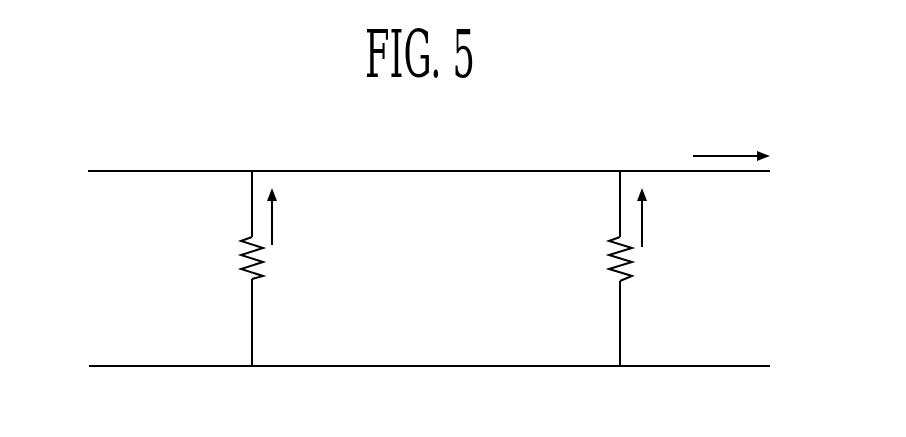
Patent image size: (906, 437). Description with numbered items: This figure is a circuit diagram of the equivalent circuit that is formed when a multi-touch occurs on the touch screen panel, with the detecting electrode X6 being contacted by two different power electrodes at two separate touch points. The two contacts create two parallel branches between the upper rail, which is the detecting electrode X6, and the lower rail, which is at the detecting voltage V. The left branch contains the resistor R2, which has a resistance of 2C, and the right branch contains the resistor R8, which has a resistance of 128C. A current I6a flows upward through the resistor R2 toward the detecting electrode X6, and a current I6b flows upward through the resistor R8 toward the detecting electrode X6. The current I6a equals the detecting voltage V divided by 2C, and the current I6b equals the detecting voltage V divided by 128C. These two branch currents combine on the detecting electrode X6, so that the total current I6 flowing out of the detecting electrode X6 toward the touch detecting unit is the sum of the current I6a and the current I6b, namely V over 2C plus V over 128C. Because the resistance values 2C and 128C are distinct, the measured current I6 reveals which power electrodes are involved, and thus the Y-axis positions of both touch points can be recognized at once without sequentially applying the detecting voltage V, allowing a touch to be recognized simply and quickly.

The detecting electrode X6 is at (414, 169).
The detecting voltage V is at (419, 365).
The current I6 is at (731, 138).
The current I6a is at (288, 222).
The current I6b is at (660, 223).
The resistor R2 is at (262, 270).
The resistor R8 is at (631, 270).
The resistance 2C is at (220, 259).
The resistance 128C is at (578, 260).